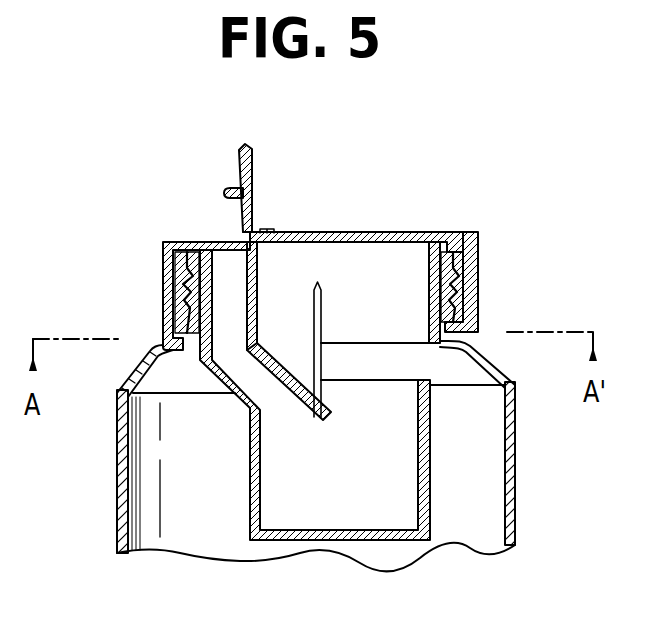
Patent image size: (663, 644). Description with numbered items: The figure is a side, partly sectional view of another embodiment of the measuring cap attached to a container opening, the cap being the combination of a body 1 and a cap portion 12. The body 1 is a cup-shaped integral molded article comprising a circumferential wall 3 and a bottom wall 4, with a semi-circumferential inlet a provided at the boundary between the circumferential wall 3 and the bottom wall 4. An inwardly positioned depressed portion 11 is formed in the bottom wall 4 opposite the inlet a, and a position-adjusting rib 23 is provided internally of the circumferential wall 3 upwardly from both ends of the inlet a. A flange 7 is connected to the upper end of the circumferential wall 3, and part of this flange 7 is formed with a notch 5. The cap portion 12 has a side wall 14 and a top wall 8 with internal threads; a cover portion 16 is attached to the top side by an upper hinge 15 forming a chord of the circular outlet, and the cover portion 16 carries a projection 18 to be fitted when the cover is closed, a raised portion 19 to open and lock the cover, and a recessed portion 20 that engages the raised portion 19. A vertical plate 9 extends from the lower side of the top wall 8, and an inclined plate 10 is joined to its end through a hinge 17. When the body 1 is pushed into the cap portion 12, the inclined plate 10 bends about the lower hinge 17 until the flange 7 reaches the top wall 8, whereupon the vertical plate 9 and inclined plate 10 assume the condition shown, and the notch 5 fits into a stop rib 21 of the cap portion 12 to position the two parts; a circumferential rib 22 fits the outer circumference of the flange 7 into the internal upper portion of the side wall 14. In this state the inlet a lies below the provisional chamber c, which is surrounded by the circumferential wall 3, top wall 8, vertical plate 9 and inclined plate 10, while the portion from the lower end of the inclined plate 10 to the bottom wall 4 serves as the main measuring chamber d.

The body 1 is at (436, 489).
The circumferential wall 3 is at (428, 285).
The bottom wall 4 is at (418, 468).
The notch 5 is at (458, 244).
The flange 7 is at (180, 243).
The top wall 8 is at (390, 230).
The vertical plate 9 is at (258, 284).
The inclined plate 10 is at (316, 414).
The depressed portion 11 is at (228, 440).
The cap portion 12 is at (508, 214).
The side wall 14 is at (176, 298).
The upper hinge 15 is at (258, 232).
The cover portion 16 is at (245, 150).
The hinge 17 is at (260, 346).
The projection 18 is at (226, 189).
The raised portion 19 is at (255, 213).
The recessed portion 20 is at (274, 233).
The stop rib 21 is at (466, 264).
The circumferential rib 22 is at (165, 258).
The position-adjusting rib 23 is at (322, 322).
The inlet a is at (415, 360).
The provisional chamber c is at (372, 268).
The main measuring chamber d is at (367, 512).